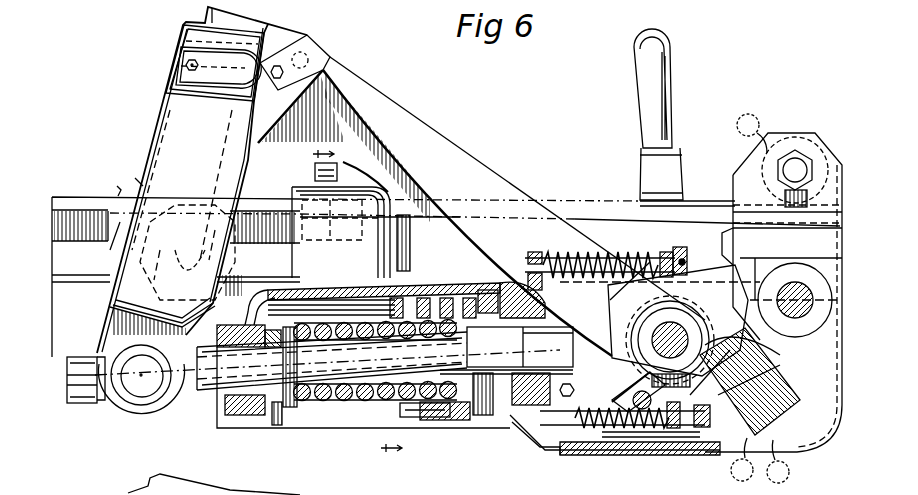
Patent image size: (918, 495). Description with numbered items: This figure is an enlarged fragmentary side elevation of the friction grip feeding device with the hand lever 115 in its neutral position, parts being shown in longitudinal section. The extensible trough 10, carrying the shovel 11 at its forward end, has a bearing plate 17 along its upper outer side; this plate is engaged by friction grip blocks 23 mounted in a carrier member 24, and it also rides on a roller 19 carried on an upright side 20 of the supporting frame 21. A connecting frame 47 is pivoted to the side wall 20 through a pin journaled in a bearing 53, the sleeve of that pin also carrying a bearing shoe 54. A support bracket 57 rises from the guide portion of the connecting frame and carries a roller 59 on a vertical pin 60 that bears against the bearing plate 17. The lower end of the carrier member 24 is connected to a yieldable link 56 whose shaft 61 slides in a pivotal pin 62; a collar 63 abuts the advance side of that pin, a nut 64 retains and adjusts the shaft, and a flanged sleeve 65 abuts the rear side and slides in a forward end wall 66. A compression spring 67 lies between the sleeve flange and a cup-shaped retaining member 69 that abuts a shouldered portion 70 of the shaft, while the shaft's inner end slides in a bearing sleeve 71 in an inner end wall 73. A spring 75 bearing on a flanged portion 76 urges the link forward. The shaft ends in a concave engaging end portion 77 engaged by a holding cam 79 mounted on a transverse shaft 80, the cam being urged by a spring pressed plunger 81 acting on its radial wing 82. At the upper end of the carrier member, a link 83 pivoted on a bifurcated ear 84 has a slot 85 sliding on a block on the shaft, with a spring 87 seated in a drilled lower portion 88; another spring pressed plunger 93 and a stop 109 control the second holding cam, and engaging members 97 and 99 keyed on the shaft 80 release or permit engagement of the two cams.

The extensible trough 10 is at (117, 184).
The shovel 11 is at (367, 300).
The bearing plate 17 is at (64, 188).
The roller 19 is at (752, 133).
The upright side 20 is at (820, 138).
The supporting frame 21 is at (830, 428).
The friction grip block 23 is at (136, 179).
The carrier member 24 is at (156, 127).
The connecting frame 47 is at (657, 460).
The bearing 53 is at (800, 284).
The bearing shoe 54 is at (724, 224).
The yieldable link 56 is at (200, 400).
The support bracket 57 is at (404, 212).
The roller 59 is at (288, 189).
The vertical pin 60 is at (356, 168).
The shaft 61 is at (305, 409).
The pivotal pin 62 is at (140, 403).
The collar 63 is at (98, 405).
The nut 64 is at (70, 406).
The flanged sleeve 65 is at (220, 420).
The forward end wall 66 is at (257, 420).
The compression spring 67 is at (347, 412).
The cup-shaped retaining member 69 is at (436, 420).
The shouldered portion 70 is at (440, 288).
The bearing sleeve 71 is at (495, 276).
The inner end wall 73 is at (522, 433).
The spring 75 is at (470, 420).
The flanged portion 76 is at (422, 422).
The engaging end portion 77 is at (580, 358).
The holding cam 79 is at (602, 362).
The transverse shaft 80 is at (714, 328).
The spring pressed plunger 81 is at (612, 435).
The radial wing 82 is at (694, 427).
The link 83 is at (497, 163).
The bifurcated ear 84 is at (330, 53).
The slot 85 is at (770, 348).
The spring 87 is at (742, 459).
The drilled lower portion 88 is at (778, 461).
The spring pressed plunger 93 is at (567, 258).
The engaging member 97 is at (678, 256).
The engaging member 99 is at (672, 248).
The rectangular stop 109 is at (638, 356).
The hand lever 115 is at (636, 70).